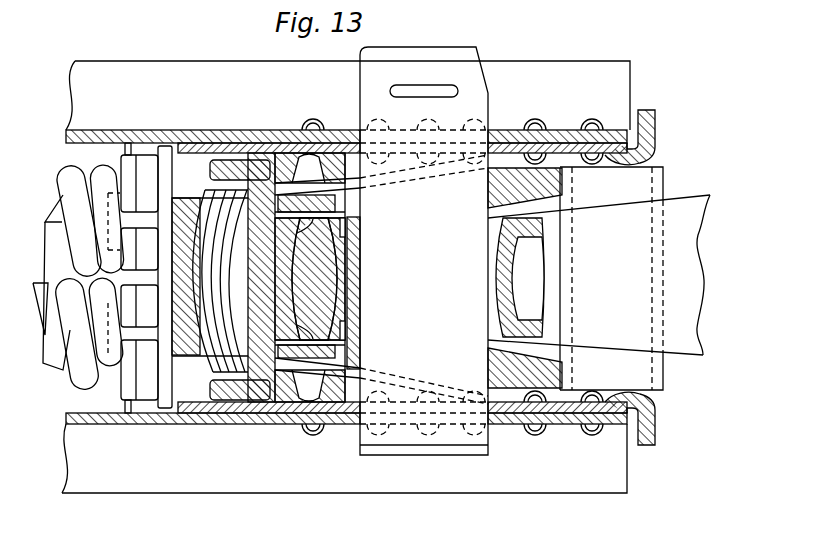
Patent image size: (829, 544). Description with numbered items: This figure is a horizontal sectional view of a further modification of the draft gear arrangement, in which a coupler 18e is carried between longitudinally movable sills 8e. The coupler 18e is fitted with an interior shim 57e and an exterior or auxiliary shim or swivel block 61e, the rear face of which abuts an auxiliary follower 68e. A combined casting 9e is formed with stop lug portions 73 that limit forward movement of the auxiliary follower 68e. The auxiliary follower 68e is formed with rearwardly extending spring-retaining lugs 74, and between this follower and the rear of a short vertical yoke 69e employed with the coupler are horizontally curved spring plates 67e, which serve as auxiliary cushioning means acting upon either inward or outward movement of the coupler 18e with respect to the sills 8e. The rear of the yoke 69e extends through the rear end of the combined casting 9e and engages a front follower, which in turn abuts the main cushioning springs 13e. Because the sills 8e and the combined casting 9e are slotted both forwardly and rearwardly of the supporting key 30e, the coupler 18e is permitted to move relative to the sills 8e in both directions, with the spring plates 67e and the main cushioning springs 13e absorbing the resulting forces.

The longitudinally movable sills 8e is at (235, 131).
The combined casting 9e is at (550, 132).
The main cushioning springs 13e is at (58, 236).
The coupler 18e is at (696, 323).
The supporting key 30e is at (423, 448).
The interior shim 57e is at (340, 277).
The exterior or auxiliary shim or swivel block 61e is at (360, 242).
The horizontally curved spring plates 67e is at (225, 352).
The auxiliary follower 68e is at (265, 403).
The short vertical yoke 69e is at (190, 204).
The stop lug portions 73 is at (288, 138).
The spring-retaining lugs 74 is at (210, 172).